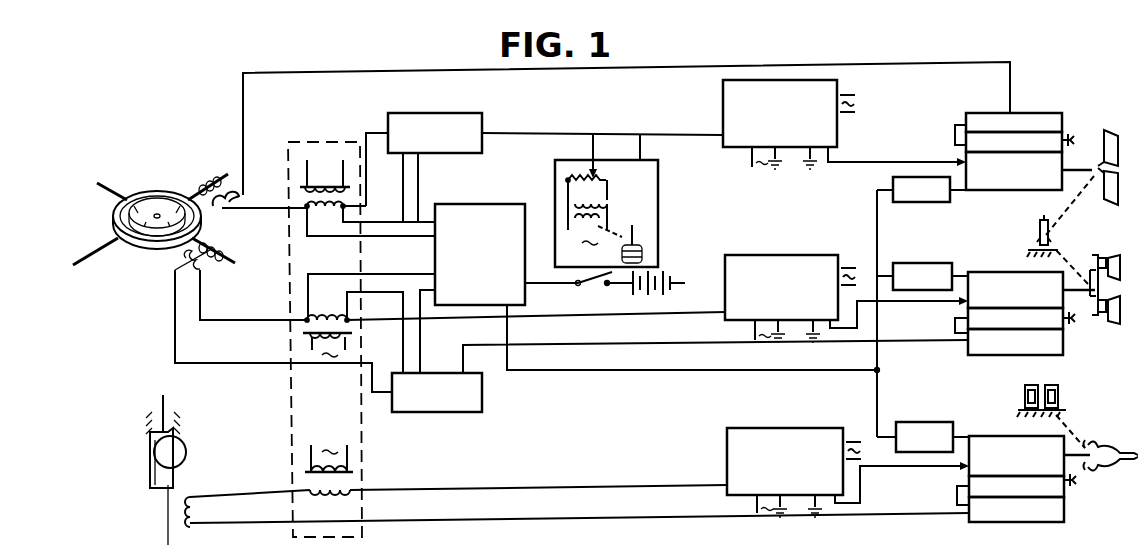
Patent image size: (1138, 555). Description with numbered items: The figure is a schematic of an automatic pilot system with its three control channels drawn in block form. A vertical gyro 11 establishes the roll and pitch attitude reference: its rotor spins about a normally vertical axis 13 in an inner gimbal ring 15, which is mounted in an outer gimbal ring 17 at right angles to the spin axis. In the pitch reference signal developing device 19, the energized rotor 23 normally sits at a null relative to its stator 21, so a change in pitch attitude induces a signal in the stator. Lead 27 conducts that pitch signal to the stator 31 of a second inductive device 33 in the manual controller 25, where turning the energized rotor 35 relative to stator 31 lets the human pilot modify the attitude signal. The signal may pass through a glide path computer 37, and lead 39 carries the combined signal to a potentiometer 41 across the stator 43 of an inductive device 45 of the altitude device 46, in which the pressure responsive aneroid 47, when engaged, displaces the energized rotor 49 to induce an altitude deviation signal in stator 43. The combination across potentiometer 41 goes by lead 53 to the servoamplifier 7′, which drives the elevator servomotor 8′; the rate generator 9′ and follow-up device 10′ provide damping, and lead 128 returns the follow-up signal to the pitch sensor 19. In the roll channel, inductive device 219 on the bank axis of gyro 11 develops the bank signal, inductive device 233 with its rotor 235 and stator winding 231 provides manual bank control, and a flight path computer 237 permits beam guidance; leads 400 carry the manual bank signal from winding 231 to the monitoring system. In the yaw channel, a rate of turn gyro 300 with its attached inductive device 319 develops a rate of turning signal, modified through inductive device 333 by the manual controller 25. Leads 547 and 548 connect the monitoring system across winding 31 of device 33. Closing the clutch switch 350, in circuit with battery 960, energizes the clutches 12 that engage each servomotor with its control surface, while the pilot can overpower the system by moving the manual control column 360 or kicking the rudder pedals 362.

The vertical gyro 11 is at (208, 265).
The normally vertical axis 13 is at (157, 214).
The inner gimbal ring 15 is at (143, 206).
The outer gimbal ring 17 is at (135, 246).
The pitch reference signal developing device 19 is at (218, 178).
The stator 21 is at (238, 200).
The energized rotor 23 is at (201, 186).
The manual controller 25 is at (305, 142).
The lead 27 is at (250, 210).
The stator 31 is at (325, 218).
The second inductive device 33 is at (294, 206).
The energized rotor 35 is at (336, 167).
The glide path computer 37 is at (432, 113).
The lead 39 is at (510, 133).
The potentiometer 41 is at (598, 201).
The stator 43 is at (604, 210).
The inductive device 45 is at (575, 207).
The altitude device 46 is at (624, 213).
The pressure responsive aneroid 47 is at (645, 248).
The energized rotor 49 is at (605, 217).
The lead 53 is at (641, 132).
The lead 128 is at (716, 66).
The inductive device 219 is at (215, 266).
The stator winding 231 is at (307, 318).
The inductive device 233 is at (305, 333).
The rotor 235 is at (340, 348).
The flight path computer 237 is at (437, 412).
The rate of turn gyro 300 is at (196, 448).
The inductive device 319 is at (178, 525).
The inductive device 333 is at (353, 485).
The clutch switch 350 is at (579, 292).
The manual control column 360 is at (1038, 227).
The rudder pedals 362 is at (1025, 392).
The leads 400 is at (363, 292).
The lead 547 is at (403, 190).
The lead 548 is at (340, 236).
The battery 960 is at (636, 298).
The servoamplifier 7′ is at (844, 124).
The servomotor 8′ is at (980, 190).
The rate generator 9′ is at (1064, 136).
The follow-up device 10′ is at (1038, 113).
The clutch 12 is at (935, 203).